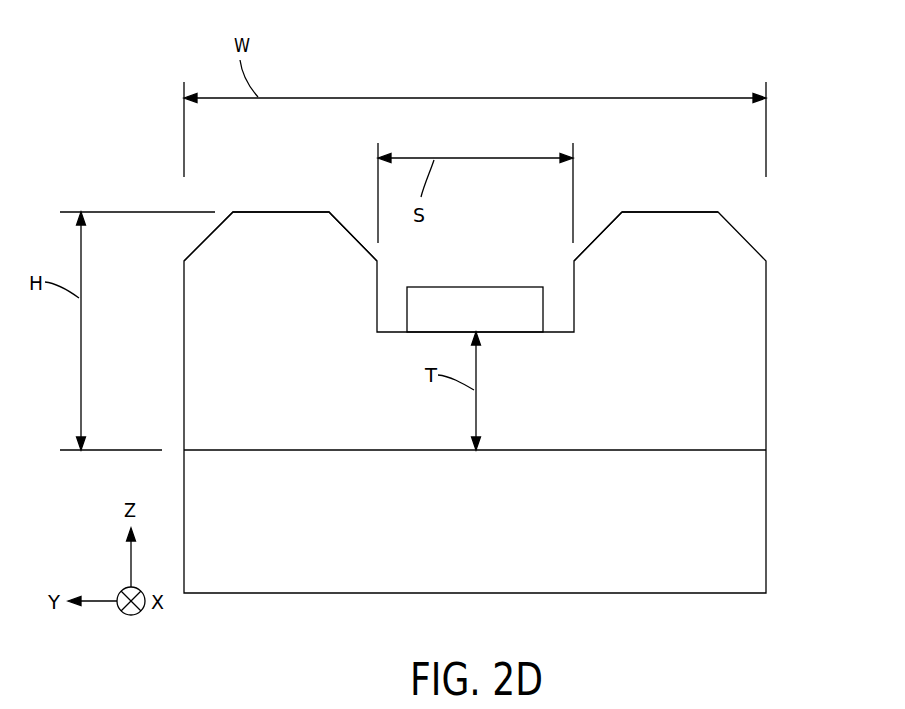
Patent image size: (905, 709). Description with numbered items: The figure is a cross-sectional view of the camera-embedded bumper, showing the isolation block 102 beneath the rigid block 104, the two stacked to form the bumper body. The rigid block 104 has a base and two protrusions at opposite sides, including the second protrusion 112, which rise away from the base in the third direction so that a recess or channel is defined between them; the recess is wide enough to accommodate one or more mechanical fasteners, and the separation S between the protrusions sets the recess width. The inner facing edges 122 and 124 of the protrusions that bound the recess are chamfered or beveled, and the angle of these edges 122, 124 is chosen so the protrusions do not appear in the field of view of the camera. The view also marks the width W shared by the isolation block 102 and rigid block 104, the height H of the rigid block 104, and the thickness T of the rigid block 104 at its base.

The isolation block 102 is at (745, 530).
The rigid block 104 is at (745, 380).
The second protrusion 112 is at (690, 212).
The inner edge 122 is at (603, 230).
The inner edge 124 is at (348, 227).